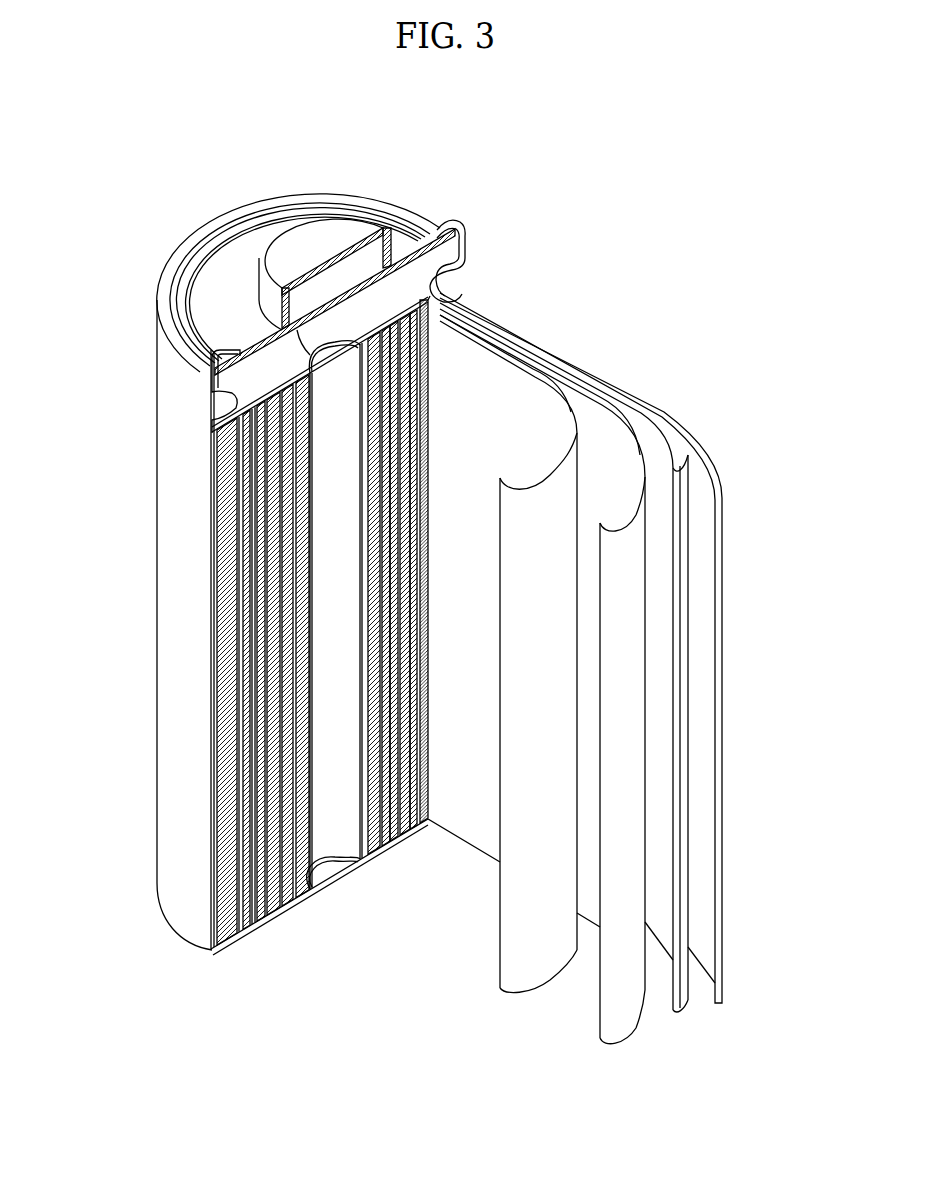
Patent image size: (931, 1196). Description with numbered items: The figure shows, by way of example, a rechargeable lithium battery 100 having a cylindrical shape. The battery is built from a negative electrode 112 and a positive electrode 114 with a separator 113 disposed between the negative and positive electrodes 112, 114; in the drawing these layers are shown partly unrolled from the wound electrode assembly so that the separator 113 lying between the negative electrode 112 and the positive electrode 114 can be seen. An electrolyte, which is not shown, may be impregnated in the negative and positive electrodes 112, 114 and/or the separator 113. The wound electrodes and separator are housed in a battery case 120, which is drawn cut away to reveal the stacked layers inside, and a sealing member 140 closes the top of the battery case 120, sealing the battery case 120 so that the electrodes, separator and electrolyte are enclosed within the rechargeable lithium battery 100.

The rechargeable lithium battery 100 is at (533, 188).
The negative electrode 112 is at (718, 485).
The separator 113 is at (538, 378).
The positive electrode 114 is at (608, 428).
The battery case 120 is at (176, 574).
The sealing member 140 is at (288, 245).